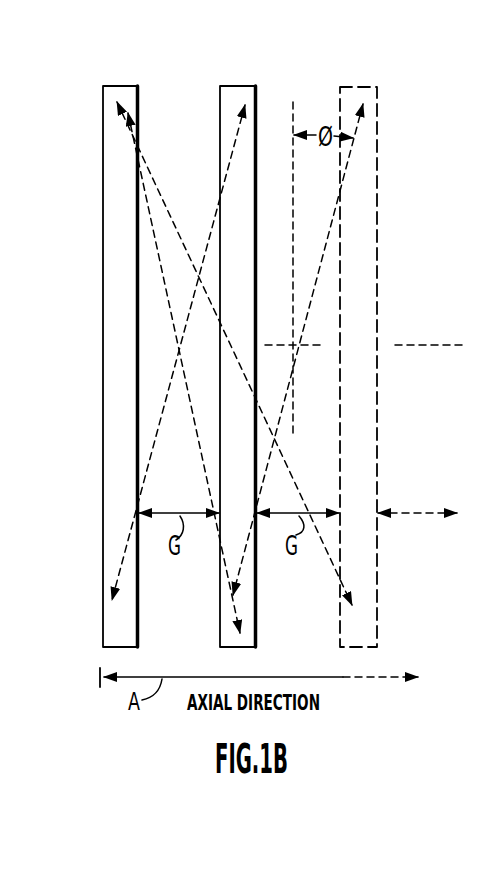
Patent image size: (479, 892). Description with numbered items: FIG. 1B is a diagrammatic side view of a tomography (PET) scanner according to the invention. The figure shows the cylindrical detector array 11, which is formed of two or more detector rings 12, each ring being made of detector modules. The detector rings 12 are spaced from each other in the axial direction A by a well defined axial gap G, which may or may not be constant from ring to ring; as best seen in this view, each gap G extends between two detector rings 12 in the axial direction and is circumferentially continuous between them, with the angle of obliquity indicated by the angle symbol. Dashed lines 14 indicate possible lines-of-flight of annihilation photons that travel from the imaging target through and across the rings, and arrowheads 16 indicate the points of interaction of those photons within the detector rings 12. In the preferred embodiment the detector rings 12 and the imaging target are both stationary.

The cylindrical detector array 11 is at (376, 66).
The detector ring 12 is at (102, 243).
The dashed lines 14 is at (155, 232).
The arrowheads 16 is at (243, 108).